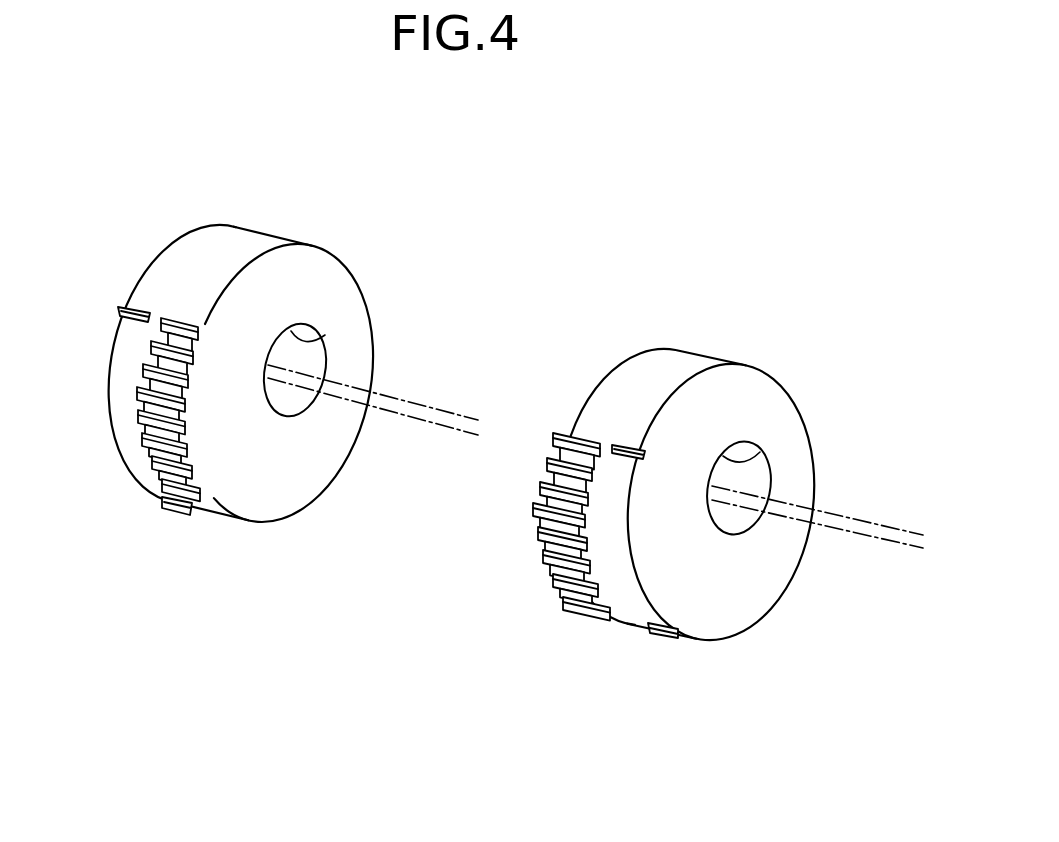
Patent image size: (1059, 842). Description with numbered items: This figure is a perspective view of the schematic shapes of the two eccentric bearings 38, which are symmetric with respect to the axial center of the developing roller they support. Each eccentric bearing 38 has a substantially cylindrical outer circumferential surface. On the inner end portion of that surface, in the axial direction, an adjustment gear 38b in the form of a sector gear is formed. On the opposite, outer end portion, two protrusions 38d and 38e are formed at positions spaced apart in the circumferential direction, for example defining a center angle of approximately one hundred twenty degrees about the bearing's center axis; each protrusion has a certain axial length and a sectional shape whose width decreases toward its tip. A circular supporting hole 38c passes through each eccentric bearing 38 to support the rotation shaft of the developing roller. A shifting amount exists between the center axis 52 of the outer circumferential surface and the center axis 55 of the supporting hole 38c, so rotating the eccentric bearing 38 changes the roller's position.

The eccentric bearing 38 is at (365, 328).
The adjustment gear 38b is at (205, 498).
The supporting hole 38c is at (314, 328).
The protrusion 38d is at (120, 308).
The protrusion 38e is at (168, 507).
The center axis of the supporting hole 55 is at (407, 400).
The center axis of the outer circumferential surface 52 is at (402, 414).